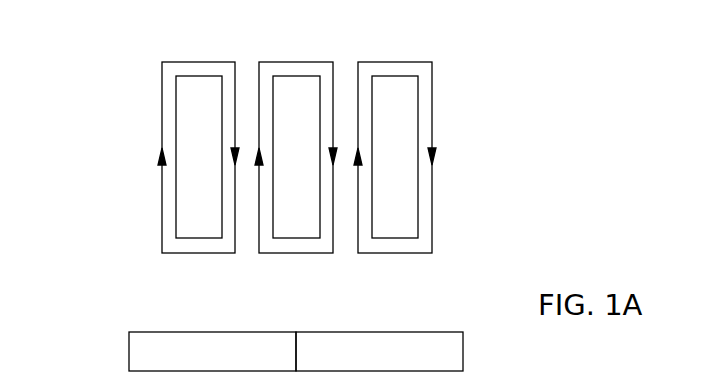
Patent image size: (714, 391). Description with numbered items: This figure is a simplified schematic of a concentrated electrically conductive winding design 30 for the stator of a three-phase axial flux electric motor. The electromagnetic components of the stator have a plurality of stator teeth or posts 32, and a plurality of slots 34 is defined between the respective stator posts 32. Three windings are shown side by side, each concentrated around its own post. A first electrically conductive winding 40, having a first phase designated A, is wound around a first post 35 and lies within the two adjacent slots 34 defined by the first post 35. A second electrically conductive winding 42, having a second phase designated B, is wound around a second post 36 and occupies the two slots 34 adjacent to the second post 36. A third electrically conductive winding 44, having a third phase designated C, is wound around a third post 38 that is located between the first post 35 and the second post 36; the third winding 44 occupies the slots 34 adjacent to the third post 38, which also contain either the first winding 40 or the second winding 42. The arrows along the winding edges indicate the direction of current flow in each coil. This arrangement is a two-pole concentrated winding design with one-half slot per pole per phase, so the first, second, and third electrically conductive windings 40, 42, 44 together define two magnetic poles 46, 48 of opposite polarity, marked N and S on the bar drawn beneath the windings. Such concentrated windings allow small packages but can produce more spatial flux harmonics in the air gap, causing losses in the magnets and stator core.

The concentrated electrically conductive winding design 30 is at (80, 117).
The stator posts 32 is at (394, 87).
The slots 34 is at (247, 90).
The first post 35 is at (210, 178).
The second post 36 is at (407, 178).
The third post 38 is at (308, 178).
The first electrically conductive winding 40 is at (162, 90).
The second electrically conductive winding 42 is at (421, 253).
The third electrically conductive winding 44 is at (322, 253).
The magnetic pole 46 is at (140, 332).
The magnetic pole 48 is at (452, 332).